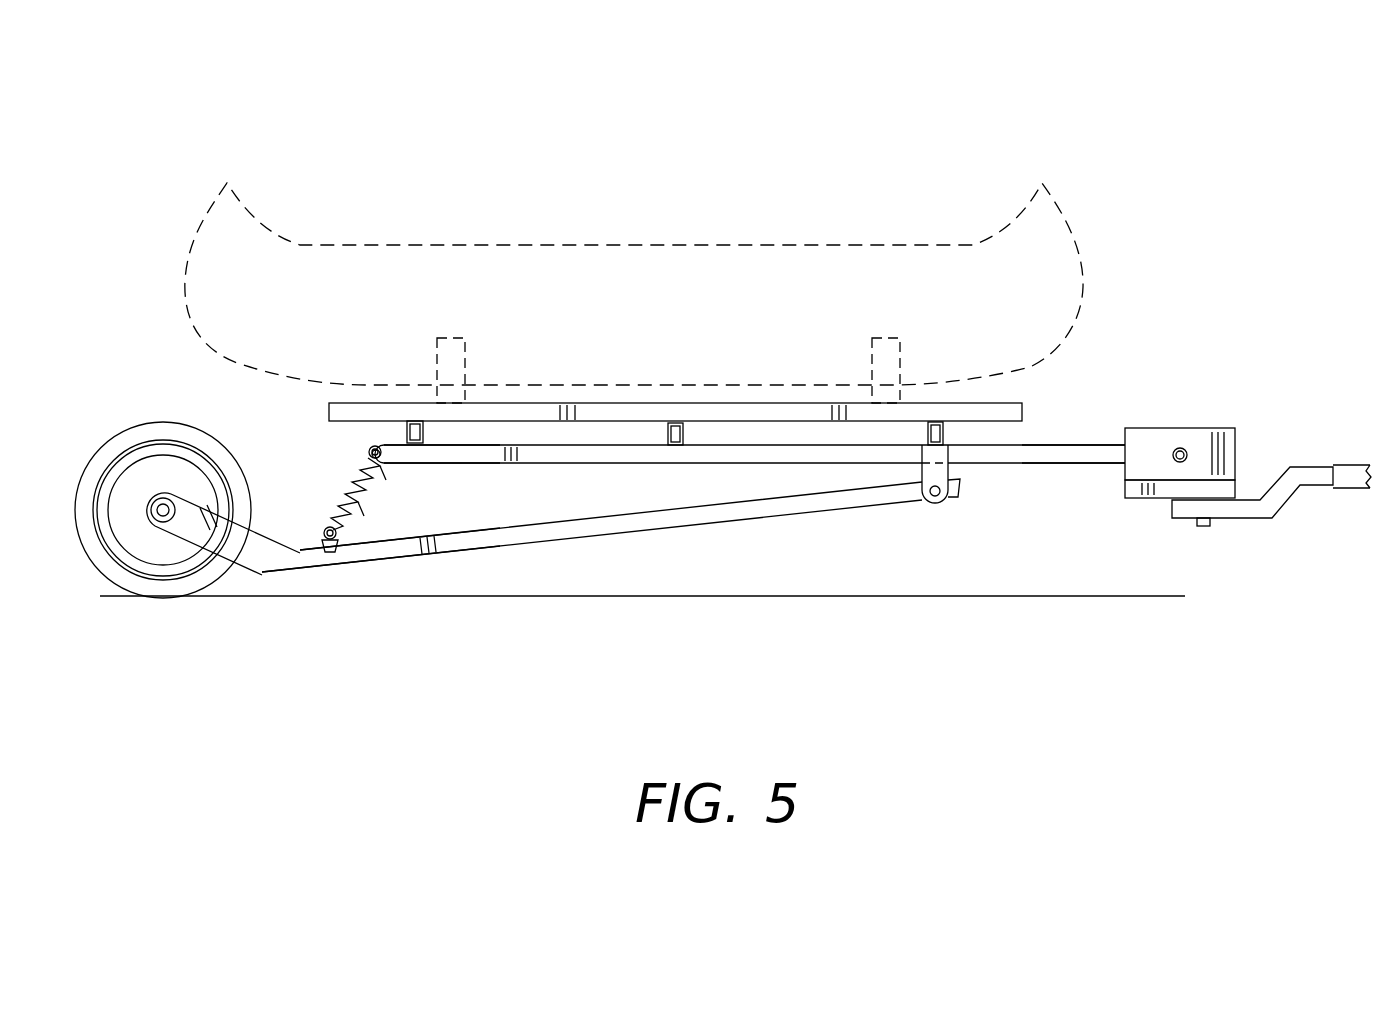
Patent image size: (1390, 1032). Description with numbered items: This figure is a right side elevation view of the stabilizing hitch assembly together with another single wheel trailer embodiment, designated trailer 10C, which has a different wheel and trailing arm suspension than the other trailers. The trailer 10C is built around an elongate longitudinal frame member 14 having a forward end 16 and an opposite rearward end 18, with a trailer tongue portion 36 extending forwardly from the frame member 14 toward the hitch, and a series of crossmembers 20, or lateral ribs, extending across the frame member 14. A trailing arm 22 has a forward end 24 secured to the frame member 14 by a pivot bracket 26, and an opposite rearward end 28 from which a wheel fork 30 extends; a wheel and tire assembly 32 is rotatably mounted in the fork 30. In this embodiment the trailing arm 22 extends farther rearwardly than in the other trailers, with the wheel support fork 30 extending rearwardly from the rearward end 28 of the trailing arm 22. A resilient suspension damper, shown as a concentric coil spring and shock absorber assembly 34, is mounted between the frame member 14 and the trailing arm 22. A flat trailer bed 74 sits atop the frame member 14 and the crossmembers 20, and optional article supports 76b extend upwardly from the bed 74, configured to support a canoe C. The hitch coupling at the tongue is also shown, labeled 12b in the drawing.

The canoe C is at (615, 247).
The article supports 76b is at (462, 338).
The trailer bed 74 is at (503, 405).
The crossmembers 20 is at (388, 418).
The frame member 14 is at (623, 460).
The forward end 16 is at (995, 465).
The rearward end 18 is at (413, 460).
The forward end 24 is at (893, 503).
The pivot bracket 26 is at (937, 500).
The trailing arm 22 is at (618, 525).
The rearward end 28 is at (383, 552).
The wheel fork 30 is at (258, 558).
The wheel and tire assembly 32 is at (176, 425).
The concentric coil spring and shock absorber assembly 34 is at (340, 470).
The trailer tongue portion 36 is at (1083, 445).
The hitch coupler 12b is at (1130, 512).
The trailer 10C is at (807, 555).